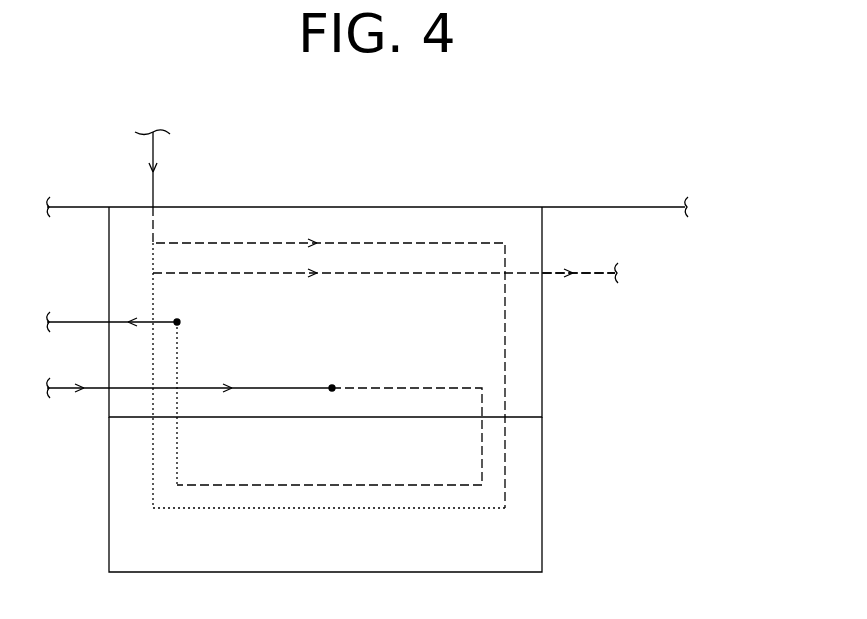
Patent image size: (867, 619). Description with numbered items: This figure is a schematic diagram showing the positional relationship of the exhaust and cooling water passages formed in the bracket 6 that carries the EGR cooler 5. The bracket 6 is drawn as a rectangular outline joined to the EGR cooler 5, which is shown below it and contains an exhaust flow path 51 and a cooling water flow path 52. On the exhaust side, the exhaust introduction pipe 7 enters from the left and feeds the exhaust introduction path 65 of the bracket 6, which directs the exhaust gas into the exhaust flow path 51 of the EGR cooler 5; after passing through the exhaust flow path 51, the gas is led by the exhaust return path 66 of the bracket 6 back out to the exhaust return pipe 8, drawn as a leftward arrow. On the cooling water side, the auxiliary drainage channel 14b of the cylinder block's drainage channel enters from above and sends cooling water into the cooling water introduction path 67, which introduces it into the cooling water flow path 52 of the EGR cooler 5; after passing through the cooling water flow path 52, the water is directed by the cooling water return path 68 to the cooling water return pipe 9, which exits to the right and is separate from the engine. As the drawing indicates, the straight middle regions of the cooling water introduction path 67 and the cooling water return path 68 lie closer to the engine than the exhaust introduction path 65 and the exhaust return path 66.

The EGR cooler 5 is at (545, 460).
The bracket 6 is at (545, 340).
The exhaust introduction pipe 7 is at (67, 392).
The exhaust return pipe 8 is at (81, 320).
The cooling water return pipe 9 is at (553, 270).
The auxiliary drainage channel 14b is at (155, 190).
The exhaust flow path 51 is at (255, 485).
The cooling water flow path 52 is at (305, 510).
The exhaust introduction path 65 is at (360, 385).
The exhaust return path 66 is at (178, 348).
The cooling water introduction path 67 is at (372, 243).
The cooling water return path 68 is at (387, 275).